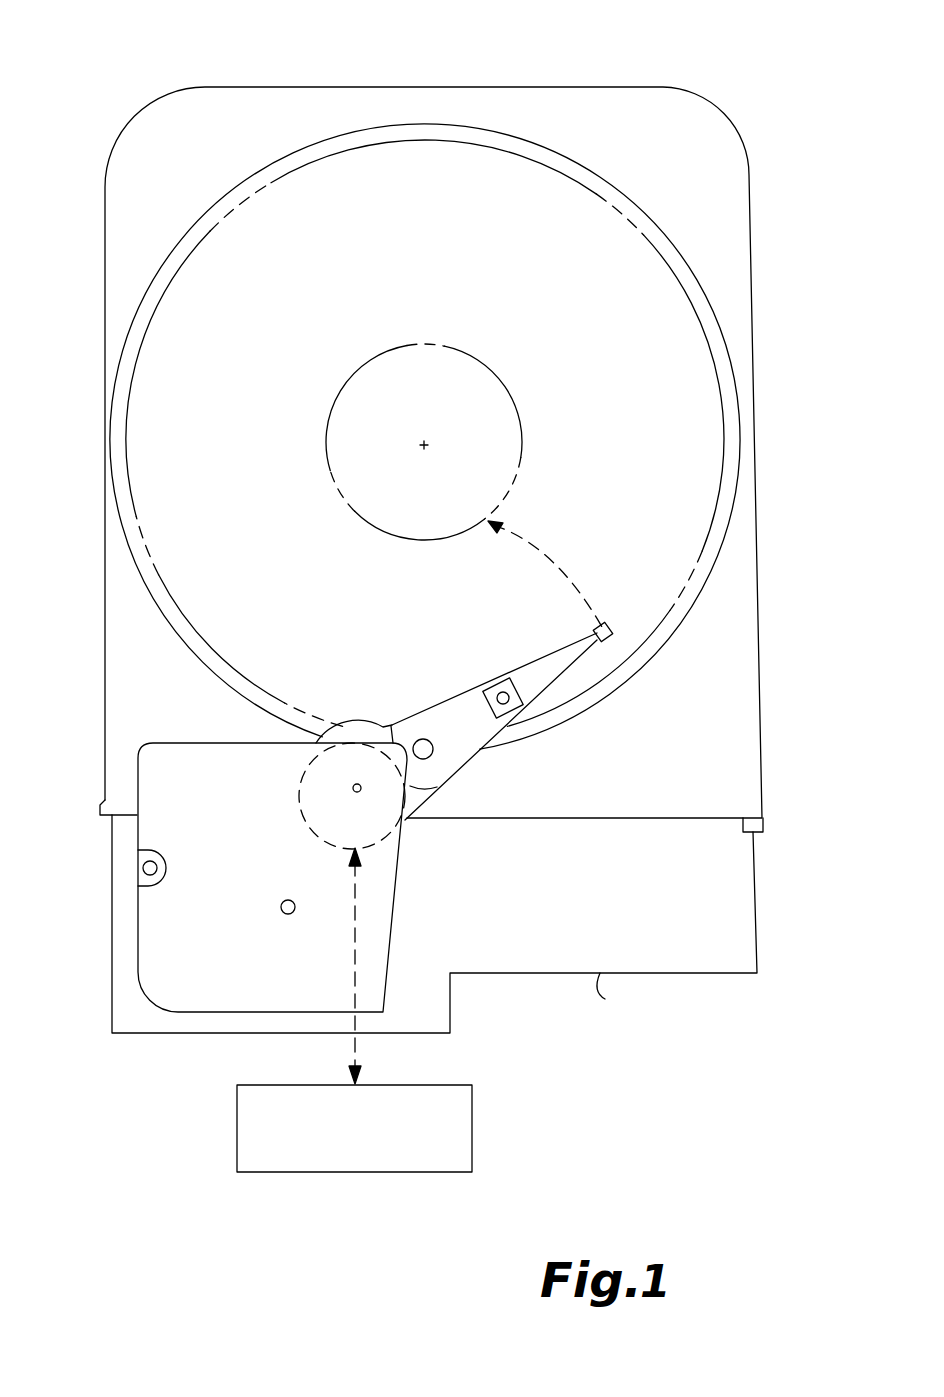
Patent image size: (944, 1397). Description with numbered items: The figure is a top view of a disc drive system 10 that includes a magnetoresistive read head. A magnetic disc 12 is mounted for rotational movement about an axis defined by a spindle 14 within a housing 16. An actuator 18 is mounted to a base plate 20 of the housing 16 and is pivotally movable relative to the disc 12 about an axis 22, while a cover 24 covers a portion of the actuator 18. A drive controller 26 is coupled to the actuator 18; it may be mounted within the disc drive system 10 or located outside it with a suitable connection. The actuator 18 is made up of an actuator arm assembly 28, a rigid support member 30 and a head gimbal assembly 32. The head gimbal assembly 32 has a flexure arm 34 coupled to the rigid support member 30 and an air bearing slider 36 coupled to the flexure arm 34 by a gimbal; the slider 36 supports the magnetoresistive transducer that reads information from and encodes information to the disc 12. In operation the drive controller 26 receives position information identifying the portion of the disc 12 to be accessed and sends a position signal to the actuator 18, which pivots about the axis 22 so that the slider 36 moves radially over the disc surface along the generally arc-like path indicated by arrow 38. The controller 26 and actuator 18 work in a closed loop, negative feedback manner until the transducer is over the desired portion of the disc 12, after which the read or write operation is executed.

The disc drive system 10 is at (258, 72).
The magnetic disc 12 is at (437, 242).
The spindle 14 is at (428, 502).
The housing 16 is at (750, 262).
The actuator 18 is at (433, 853).
The base plate 20 is at (605, 999).
The axis 22 is at (353, 786).
The cover 24 is at (158, 838).
The drive controller 26 is at (472, 1090).
The actuator arm assembly 28 is at (360, 716).
The rigid support member 30 is at (443, 772).
The head gimbal assembly 32 is at (561, 632).
The flexure arm 34 is at (523, 663).
The air bearing slider 36 is at (628, 664).
The arrow 38 is at (534, 548).